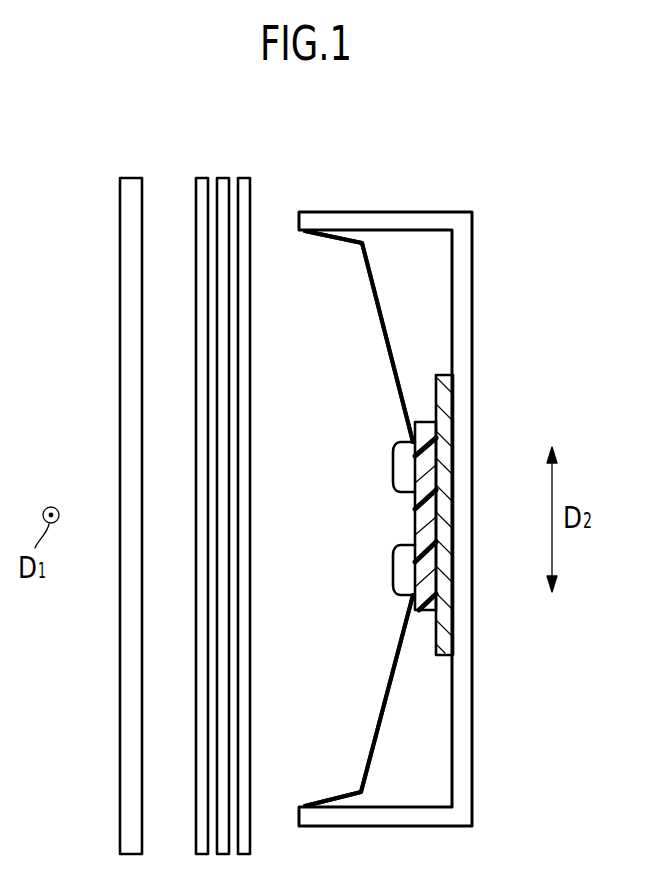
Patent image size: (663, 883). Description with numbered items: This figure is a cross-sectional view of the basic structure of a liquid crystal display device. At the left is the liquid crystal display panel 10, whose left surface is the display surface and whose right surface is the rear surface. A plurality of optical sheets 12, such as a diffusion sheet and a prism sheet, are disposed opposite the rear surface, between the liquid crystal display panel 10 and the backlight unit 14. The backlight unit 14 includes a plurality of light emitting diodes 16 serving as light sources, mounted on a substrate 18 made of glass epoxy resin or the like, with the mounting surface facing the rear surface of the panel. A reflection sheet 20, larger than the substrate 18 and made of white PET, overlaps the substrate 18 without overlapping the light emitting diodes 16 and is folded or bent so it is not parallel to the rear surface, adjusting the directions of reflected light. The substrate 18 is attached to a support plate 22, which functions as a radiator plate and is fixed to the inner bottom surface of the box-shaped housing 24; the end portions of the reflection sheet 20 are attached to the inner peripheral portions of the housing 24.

The liquid crystal display panel 10 is at (128, 177).
The optical sheets 12 is at (255, 163).
The backlight unit 14 is at (368, 361).
The light emitting diodes 16 is at (393, 466).
The substrate 18 is at (423, 426).
The reflection sheet 20 is at (368, 273).
The support plate 22 is at (442, 375).
The housing 24 is at (421, 225).